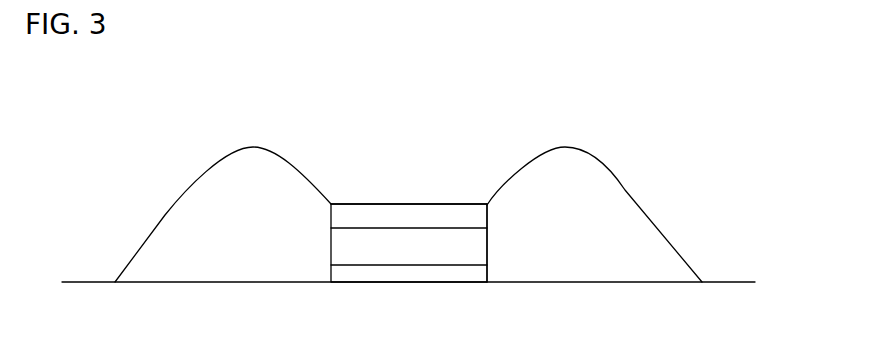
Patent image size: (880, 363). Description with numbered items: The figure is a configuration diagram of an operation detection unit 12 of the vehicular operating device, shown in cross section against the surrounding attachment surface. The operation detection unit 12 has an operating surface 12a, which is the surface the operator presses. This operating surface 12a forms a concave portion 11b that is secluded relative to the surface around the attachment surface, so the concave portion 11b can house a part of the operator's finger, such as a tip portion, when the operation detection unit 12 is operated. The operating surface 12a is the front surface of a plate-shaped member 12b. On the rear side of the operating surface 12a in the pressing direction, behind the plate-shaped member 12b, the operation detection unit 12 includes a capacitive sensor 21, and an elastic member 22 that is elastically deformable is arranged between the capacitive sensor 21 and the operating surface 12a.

The concave portion 11b is at (273, 150).
The operation detection unit 12 is at (452, 114).
The operating surface 12a is at (409, 203).
The plate-shaped member 12b is at (483, 215).
The capacitive sensor 21 is at (427, 277).
The elastic member 22 is at (483, 247).